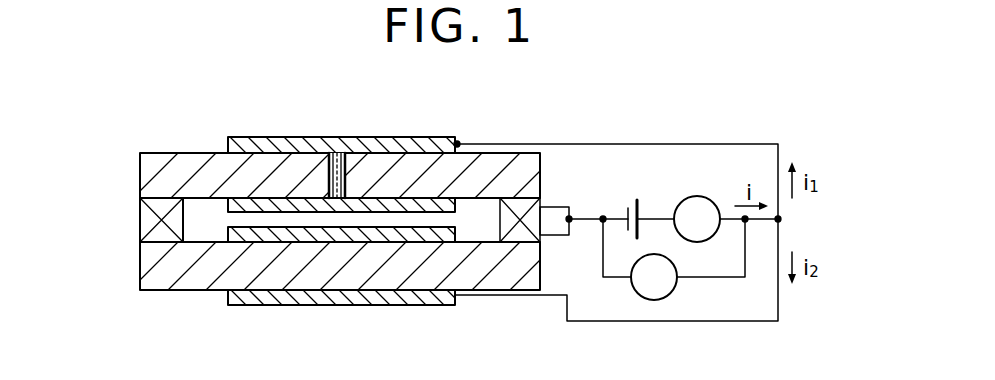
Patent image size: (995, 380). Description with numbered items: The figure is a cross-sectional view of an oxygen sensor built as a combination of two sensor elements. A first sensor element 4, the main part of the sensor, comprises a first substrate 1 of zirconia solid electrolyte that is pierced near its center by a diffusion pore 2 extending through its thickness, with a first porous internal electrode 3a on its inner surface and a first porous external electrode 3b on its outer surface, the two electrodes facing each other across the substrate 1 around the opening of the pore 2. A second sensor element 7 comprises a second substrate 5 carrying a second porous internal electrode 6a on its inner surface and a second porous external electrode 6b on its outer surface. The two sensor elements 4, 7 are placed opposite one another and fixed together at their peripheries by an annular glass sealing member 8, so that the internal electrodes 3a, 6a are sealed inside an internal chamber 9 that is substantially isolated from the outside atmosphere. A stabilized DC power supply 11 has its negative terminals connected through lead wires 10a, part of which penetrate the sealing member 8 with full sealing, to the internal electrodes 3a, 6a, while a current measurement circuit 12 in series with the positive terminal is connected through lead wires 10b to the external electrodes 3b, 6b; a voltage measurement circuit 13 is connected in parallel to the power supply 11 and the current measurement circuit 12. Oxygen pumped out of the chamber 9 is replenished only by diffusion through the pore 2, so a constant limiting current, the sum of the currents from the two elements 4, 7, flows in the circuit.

The first substrate 1 is at (188, 175).
The diffusion pore 2 is at (338, 152).
The first porous internal electrode 3a is at (283, 200).
The first porous external electrode 3b is at (312, 144).
The first sensor element 4 is at (128, 150).
The second substrate 5 is at (184, 283).
The second porous internal electrode 6a is at (278, 238).
The second porous external electrode 6b is at (332, 296).
The second sensor element 7 is at (128, 242).
The sealing member 8 is at (150, 220).
The internal chamber 9 is at (213, 228).
The lead wires 10a is at (556, 226).
The lead wires 10b is at (620, 144).
The stabilized DC power supply 11 is at (631, 206).
The current measurement circuit 12 is at (700, 196).
The voltage measurement circuit 13 is at (676, 288).